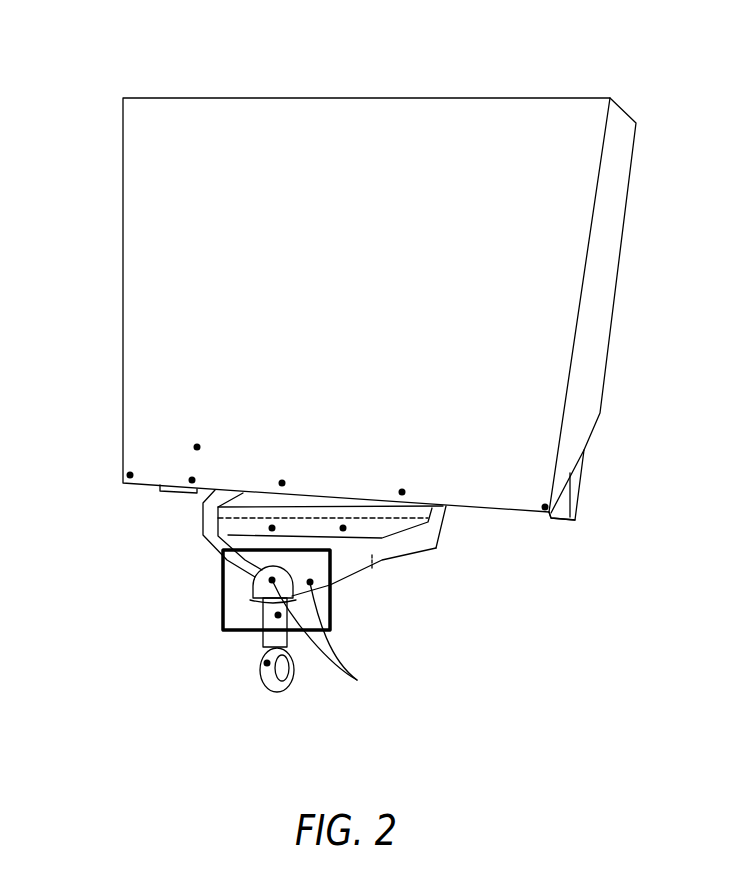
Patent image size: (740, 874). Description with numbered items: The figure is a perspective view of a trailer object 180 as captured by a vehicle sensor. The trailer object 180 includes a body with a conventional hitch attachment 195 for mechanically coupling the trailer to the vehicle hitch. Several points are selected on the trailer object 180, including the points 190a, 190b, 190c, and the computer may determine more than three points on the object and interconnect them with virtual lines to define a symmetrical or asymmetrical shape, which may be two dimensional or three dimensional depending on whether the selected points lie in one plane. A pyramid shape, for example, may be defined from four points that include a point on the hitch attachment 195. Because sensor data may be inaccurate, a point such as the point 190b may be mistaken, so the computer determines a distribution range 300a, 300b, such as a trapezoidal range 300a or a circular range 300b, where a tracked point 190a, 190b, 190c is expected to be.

The trailer object 180 is at (572, 98).
The point 190a is at (130, 483).
The point 190b is at (548, 516).
The point 190c is at (357, 680).
The hitch attachment 195 is at (256, 603).
The trapezoidal shaped range 300a is at (330, 602).
The circular or ellipse-shaped range 300b is at (276, 590).